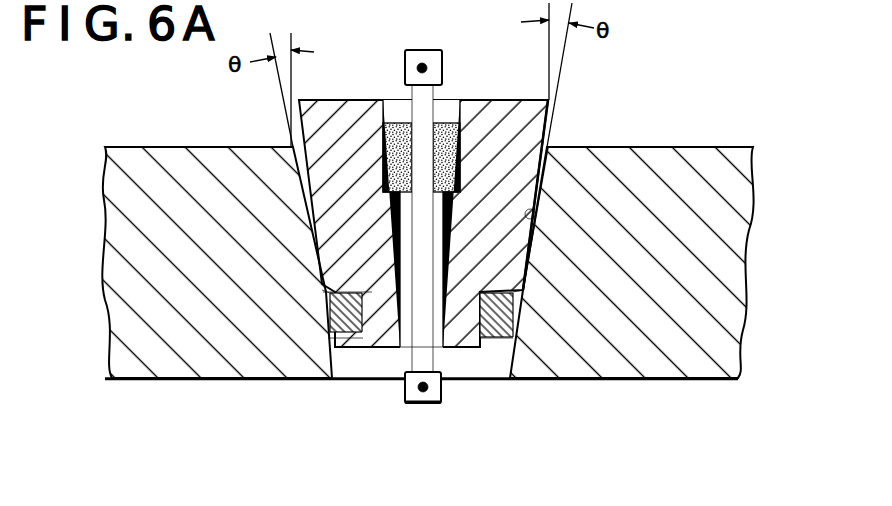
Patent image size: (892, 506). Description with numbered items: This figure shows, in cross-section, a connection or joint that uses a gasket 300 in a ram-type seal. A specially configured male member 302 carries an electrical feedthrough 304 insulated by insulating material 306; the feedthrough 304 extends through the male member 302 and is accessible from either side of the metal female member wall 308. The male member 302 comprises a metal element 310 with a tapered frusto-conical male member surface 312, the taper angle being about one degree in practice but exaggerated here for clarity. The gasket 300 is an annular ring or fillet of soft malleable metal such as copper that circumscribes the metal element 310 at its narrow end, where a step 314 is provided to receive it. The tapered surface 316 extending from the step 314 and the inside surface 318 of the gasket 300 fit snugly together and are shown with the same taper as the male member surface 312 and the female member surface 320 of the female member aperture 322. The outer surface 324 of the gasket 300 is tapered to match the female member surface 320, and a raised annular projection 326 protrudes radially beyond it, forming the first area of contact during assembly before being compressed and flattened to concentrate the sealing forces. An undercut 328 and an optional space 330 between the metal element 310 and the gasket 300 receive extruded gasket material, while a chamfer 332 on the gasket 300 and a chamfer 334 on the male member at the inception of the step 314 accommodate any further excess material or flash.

The gasket 300 is at (513, 303).
The male member 302 is at (571, 110).
The electrical feedthrough 304 is at (443, 67).
The insulating material 306 is at (397, 127).
The metal female member wall 308 is at (133, 368).
The metal element 310 is at (520, 141).
The tapered frusto-conical male member surface 312 is at (553, 162).
The step 314 is at (325, 330).
The tapered surface 316 is at (368, 334).
The inside surface 318 is at (345, 335).
The female member surface 320 is at (540, 211).
The female member aperture 322 is at (457, 372).
The outer surface 324 is at (513, 318).
The raised annular projection 326 is at (520, 300).
The undercut 328 is at (332, 340).
The optional space 330 is at (518, 289).
The chamfer 332 is at (335, 293).
The chamfer 334 is at (368, 292).